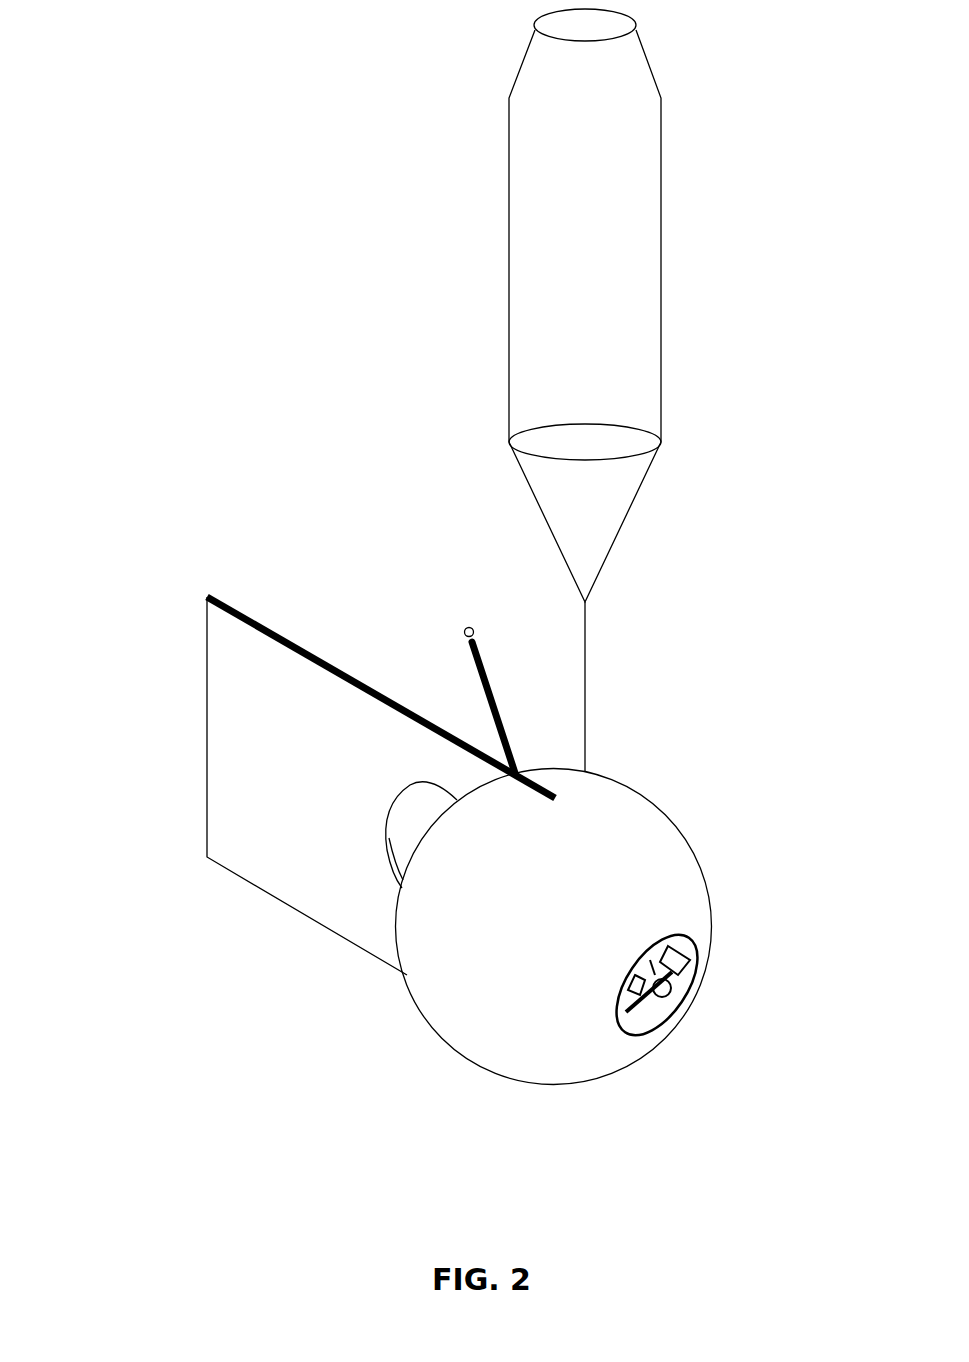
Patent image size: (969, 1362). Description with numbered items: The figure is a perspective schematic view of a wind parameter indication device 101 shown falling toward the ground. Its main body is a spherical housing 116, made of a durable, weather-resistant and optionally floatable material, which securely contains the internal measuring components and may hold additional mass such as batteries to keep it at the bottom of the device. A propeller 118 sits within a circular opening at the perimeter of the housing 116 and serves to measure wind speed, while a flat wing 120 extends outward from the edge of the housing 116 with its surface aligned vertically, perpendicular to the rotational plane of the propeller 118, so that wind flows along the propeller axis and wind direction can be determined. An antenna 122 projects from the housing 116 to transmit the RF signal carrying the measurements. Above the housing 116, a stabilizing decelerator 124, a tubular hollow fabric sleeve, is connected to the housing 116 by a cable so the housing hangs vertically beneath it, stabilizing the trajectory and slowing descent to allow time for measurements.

The wind parameter indication device 101 is at (212, 23).
The housing 116 is at (617, 857).
The propeller 118 is at (670, 1023).
The wing 120 is at (254, 758).
The antenna 122 is at (488, 678).
The stabilizing decelerator 124 is at (509, 217).